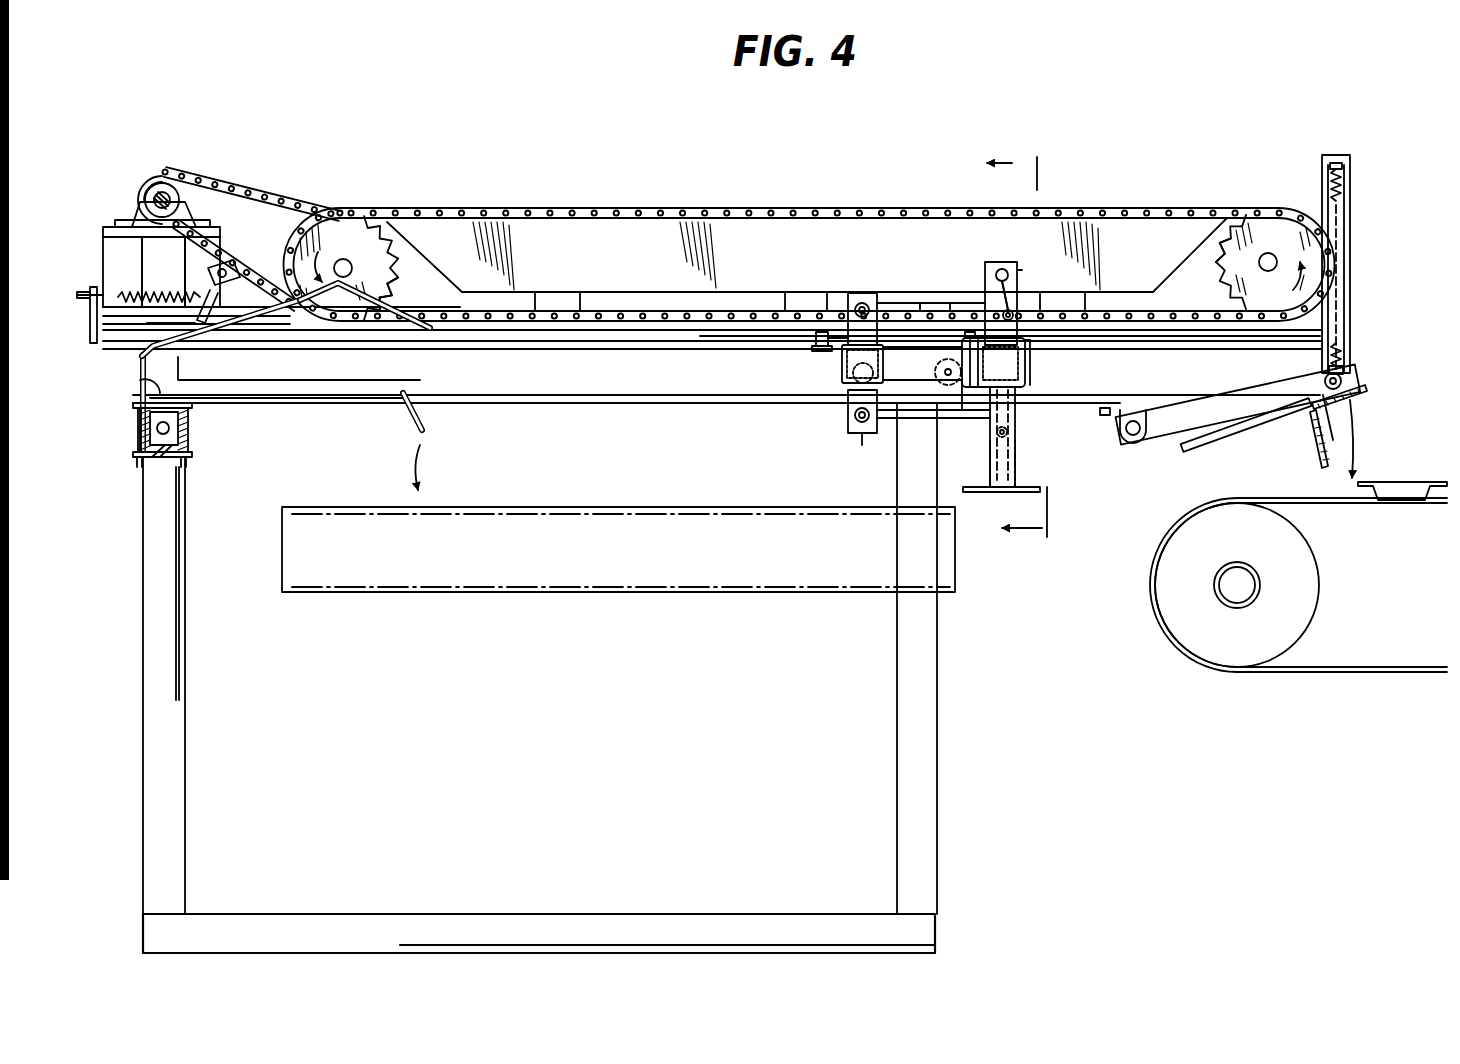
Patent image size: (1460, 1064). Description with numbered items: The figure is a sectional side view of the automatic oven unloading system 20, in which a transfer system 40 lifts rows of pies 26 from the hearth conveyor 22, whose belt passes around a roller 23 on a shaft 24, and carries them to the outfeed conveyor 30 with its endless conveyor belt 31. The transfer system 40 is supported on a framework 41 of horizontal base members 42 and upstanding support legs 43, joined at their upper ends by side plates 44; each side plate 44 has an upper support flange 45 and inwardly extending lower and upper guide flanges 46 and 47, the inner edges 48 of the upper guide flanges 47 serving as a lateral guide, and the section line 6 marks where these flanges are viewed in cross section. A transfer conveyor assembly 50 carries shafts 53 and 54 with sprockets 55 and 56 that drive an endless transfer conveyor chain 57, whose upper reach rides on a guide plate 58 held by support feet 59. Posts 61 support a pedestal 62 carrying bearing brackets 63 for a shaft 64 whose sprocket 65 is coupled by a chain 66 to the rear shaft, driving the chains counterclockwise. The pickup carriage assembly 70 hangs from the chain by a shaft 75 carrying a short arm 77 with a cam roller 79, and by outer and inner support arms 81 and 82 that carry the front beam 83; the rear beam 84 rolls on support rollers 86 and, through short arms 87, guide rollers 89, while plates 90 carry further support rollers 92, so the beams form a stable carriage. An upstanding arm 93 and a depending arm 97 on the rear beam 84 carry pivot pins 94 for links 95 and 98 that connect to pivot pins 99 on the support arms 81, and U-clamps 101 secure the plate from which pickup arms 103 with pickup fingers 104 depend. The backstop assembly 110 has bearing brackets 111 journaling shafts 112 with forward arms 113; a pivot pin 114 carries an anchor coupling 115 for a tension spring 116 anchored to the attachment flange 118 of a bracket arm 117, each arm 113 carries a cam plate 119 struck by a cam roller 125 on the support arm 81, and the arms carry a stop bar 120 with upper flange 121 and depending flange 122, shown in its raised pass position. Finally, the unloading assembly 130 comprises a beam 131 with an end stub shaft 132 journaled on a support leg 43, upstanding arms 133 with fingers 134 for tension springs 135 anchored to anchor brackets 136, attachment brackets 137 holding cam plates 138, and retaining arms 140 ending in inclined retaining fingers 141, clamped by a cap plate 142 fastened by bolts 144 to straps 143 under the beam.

The automatic oven unloading system 20 is at (676, 82).
The hearth conveyor belt 22 is at (1382, 673).
The roller 23 is at (1320, 610).
The shaft 24 is at (1243, 578).
The pies 26 is at (1409, 482).
The outfeed conveyor 30 is at (618, 566).
The endless conveyor belt 31 is at (622, 510).
The transfer system 40 is at (480, 150).
The framework 41 is at (494, 678).
The horizontal base members 42 is at (700, 914).
The support legs 43 is at (187, 713).
The side plates 44 is at (605, 372).
The horizontal support flange 45 is at (281, 315).
The lower guide flange 46 is at (512, 343).
The upper guide flange 47 is at (512, 405).
The inner edges 48 is at (708, 343).
The transfer conveyor assembly 50 is at (809, 232).
The shaft 53 is at (1270, 255).
The shaft 54 is at (362, 248).
The sprocket 55 is at (1232, 272).
The sprocket 56 is at (392, 283).
The endless transfer conveyor chain 57 is at (748, 209).
The guide plate 58 is at (570, 235).
The support feet 59 is at (590, 300).
The section line 6 is at (1031, 347).
The upstanding posts 61 is at (196, 250).
The pedestals 62 is at (110, 236).
The bearing brackets 63 is at (138, 220).
The elongated shaft 64 is at (162, 183).
The sprocket 65 is at (190, 196).
The chains 66 is at (300, 202).
The pickup carriage assembly 70 is at (921, 376).
The horizontal shafts 75 is at (1006, 268).
The short arm 77 is at (983, 296).
The cam rollers 79 is at (1018, 287).
The outer support arm 81 is at (1016, 412).
The inner support arm 82 is at (1018, 275).
The front beam 83 is at (1105, 363).
The rear beam 84 is at (848, 398).
The support rollers 86 is at (882, 358).
The short arms 87 is at (825, 362).
The guide rollers 89 is at (815, 342).
The short rectangular plates 90 is at (925, 383).
The support rollers 92 is at (993, 359).
The upstanding arm 93 is at (860, 300).
The pivot pin 94 is at (872, 306).
The link 95 is at (930, 303).
The depending arm 97 is at (852, 432).
The link 98 is at (963, 418).
The pivot pins 99 is at (862, 432).
The U-clamps 101 is at (1028, 375).
The pickup arms 103 is at (1000, 468).
The pickup finger 104 is at (978, 492).
The backstop assembly 110 is at (1255, 298).
The bearing brackets 111 is at (1118, 425).
The coaxial shafts 112 is at (1133, 436).
The forwardly extending arms 113 is at (1222, 400).
The pivot pin 114 is at (1326, 378).
The anchor coupling 115 is at (1343, 366).
The tension spring 116 is at (1345, 198).
The upstanding bracket arm 117 is at (1348, 177).
The attachment flange 118 is at (1338, 158).
The cam plate 119 is at (1198, 447).
The stop bar 120 is at (1315, 452).
The horizontal upper flange 121 is at (1370, 395).
The vertical depending flange 122 is at (1312, 436).
The cam roller 125 is at (1010, 436).
The unloading assembly 130 is at (148, 453).
The elongated beam 131 is at (185, 457).
The pivot hole 132 is at (170, 430).
The upstanding arms 133 is at (182, 373).
The finger 134 is at (250, 290).
The tension springs 135 is at (164, 292).
The anchor brackets 136 is at (90, 322).
The attachment bracket 137 is at (250, 330).
The cam plates 138 is at (300, 315).
The retaining arms 140 is at (318, 403).
The retaining finger 141 is at (412, 410).
The cap plate 142 is at (138, 385).
The straps 143 is at (135, 437).
The bolts 144 is at (138, 423).